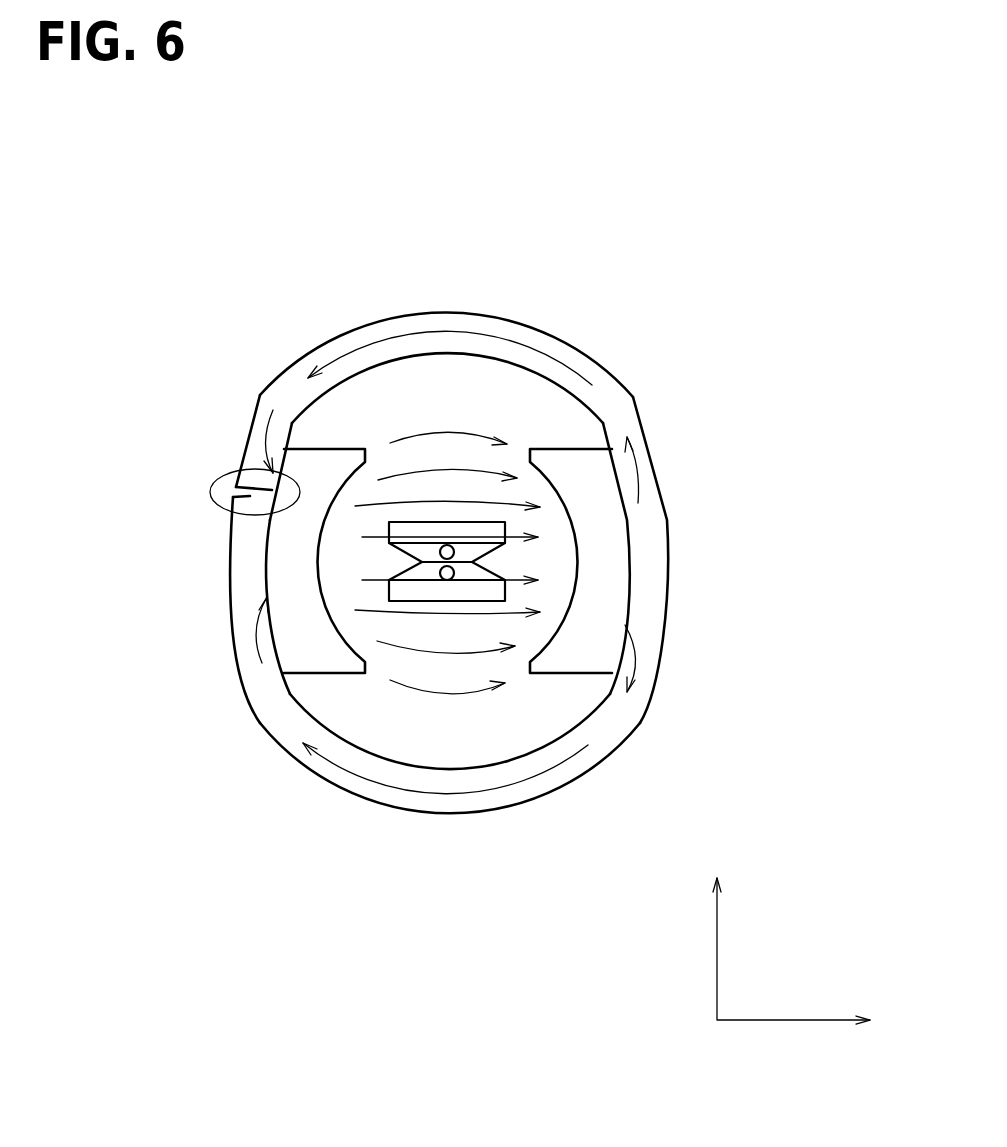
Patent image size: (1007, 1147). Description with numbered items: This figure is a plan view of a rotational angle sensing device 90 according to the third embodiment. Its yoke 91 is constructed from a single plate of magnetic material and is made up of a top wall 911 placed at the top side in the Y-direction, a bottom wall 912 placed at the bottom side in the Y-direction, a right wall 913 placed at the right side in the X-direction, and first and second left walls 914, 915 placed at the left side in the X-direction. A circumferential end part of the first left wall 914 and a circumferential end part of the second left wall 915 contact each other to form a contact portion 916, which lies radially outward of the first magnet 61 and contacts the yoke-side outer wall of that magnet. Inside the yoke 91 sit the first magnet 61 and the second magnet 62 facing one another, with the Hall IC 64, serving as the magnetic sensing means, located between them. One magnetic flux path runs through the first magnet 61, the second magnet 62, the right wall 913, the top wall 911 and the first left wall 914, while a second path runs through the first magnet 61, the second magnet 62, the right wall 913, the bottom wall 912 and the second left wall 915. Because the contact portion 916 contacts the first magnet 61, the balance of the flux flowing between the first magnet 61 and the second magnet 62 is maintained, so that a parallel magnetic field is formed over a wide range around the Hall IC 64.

The rotational angle sensing device 90 is at (610, 172).
The yoke 91 is at (327, 350).
The top wall 911 is at (473, 317).
The bottom wall 912 is at (463, 803).
The right wall 913 is at (652, 583).
The first left wall 914 is at (252, 430).
The second left wall 915 is at (247, 682).
The contact portion 916 is at (218, 506).
The first magnet 61 is at (308, 653).
The second magnet 62 is at (577, 660).
The Hall IC 64 is at (462, 588).